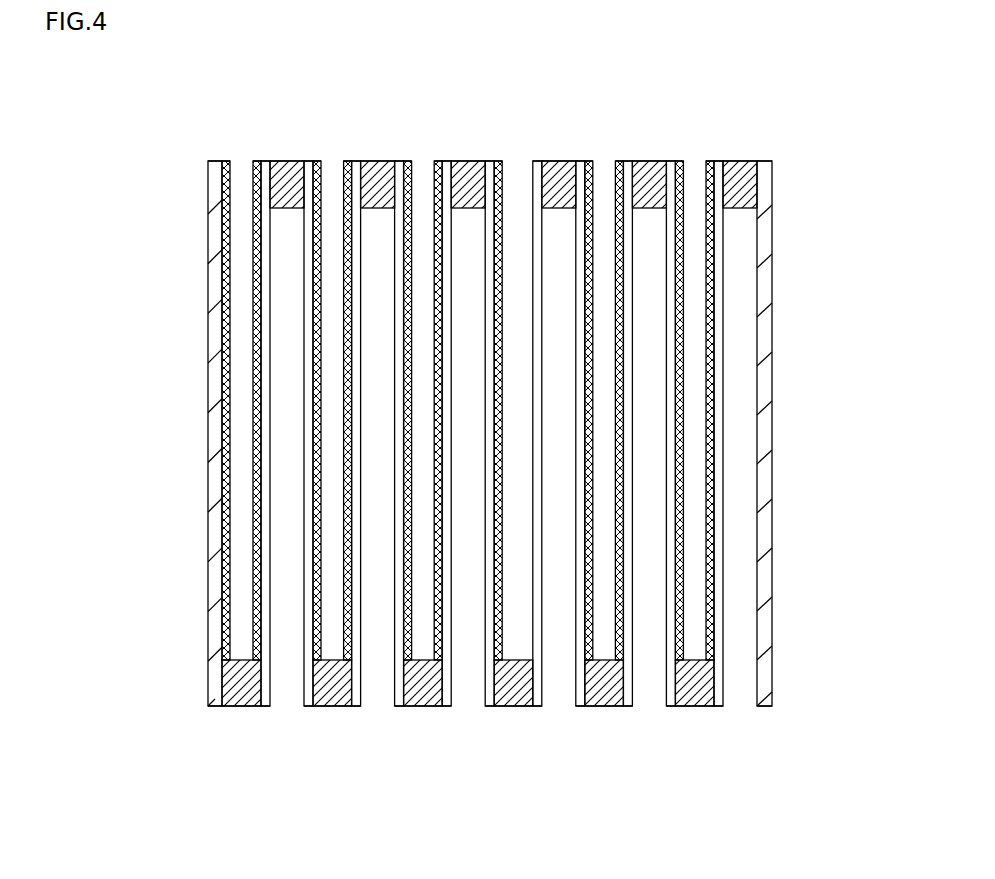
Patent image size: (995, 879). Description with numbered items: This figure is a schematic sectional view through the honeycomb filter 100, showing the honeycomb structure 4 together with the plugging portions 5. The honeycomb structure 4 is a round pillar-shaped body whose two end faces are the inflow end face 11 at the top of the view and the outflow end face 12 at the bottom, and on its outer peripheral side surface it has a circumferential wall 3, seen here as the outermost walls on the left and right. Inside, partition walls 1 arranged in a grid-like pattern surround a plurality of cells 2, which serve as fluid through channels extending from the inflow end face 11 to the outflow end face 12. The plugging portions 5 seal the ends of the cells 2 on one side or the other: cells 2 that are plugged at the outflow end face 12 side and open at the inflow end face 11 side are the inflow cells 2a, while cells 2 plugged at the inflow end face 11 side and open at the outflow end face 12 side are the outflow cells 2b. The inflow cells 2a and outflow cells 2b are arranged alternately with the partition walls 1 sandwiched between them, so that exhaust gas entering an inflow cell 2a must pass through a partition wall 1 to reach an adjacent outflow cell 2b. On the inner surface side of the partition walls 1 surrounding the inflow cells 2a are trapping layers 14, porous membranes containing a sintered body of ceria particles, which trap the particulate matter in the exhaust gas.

The honeycomb filter 100 is at (858, 72).
The partition walls 1 is at (673, 192).
The cells 2 is at (492, 431).
The inflow cells 2a is at (600, 222).
The outflow cells 2b is at (645, 640).
The circumferential wall 3 is at (215, 330).
The honeycomb structure 4 is at (780, 153).
The plugging portions 5 is at (468, 185).
The inflow end face 11 is at (257, 146).
The outflow end face 12 is at (268, 718).
The trapping layers 14 is at (587, 290).